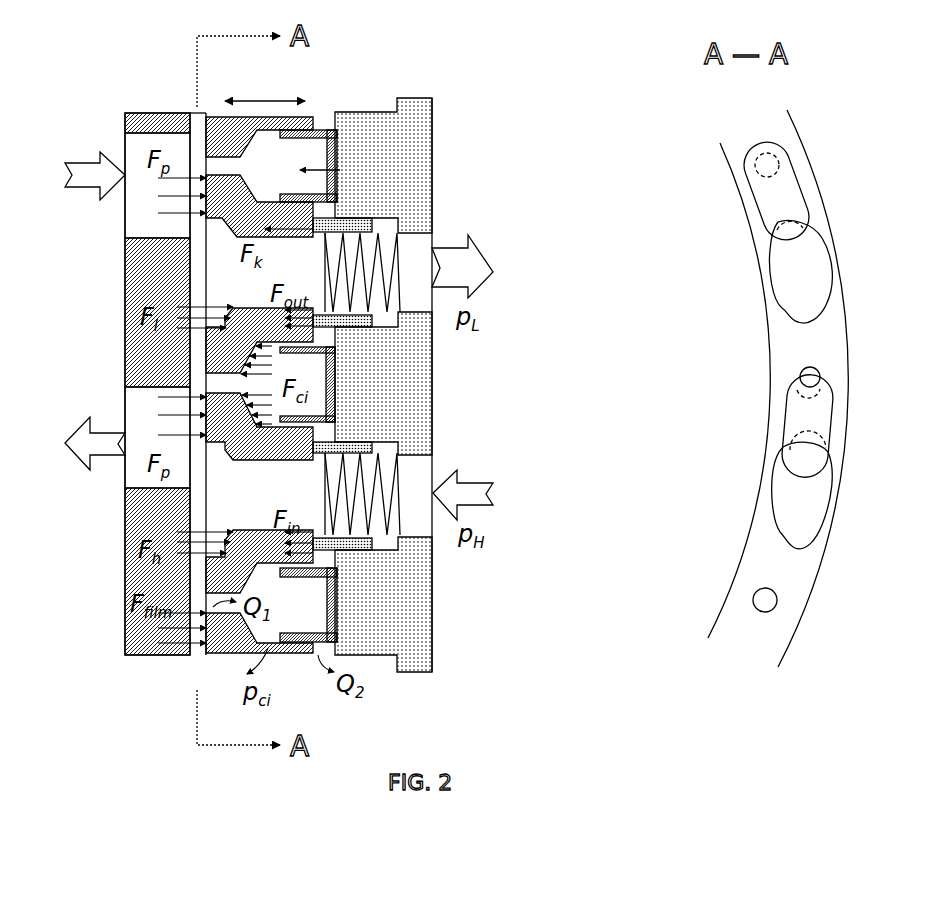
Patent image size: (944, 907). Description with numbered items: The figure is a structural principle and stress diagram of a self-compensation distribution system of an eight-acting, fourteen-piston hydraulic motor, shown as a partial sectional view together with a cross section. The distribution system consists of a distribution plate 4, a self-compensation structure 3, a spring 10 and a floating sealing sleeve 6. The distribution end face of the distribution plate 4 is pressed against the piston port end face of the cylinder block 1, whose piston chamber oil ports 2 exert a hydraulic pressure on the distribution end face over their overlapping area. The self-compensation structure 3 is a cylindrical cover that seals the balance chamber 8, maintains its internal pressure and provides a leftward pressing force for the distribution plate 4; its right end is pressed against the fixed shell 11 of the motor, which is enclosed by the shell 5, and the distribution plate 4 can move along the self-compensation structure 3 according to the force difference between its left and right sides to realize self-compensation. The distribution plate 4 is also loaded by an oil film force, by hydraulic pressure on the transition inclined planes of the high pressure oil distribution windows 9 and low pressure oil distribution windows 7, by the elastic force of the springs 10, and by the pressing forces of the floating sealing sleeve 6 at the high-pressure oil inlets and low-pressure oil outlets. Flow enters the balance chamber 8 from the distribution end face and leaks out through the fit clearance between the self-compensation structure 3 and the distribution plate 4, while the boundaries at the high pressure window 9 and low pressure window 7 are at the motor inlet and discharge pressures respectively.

The cylinder block 1 is at (143, 113).
The piston chamber oil port 2 is at (135, 218).
The self-compensation structure 3 is at (333, 133).
The distribution plate 4 is at (305, 115).
The shell 5 is at (303, 168).
The floating sealing sleeve 6 is at (357, 218).
The low pressure oil distribution window 7 is at (417, 247).
The balance chamber 8 is at (312, 370).
The high pressure oil distribution window 9 is at (423, 472).
The spring 10 is at (383, 510).
The fixed shell 11 is at (372, 612).